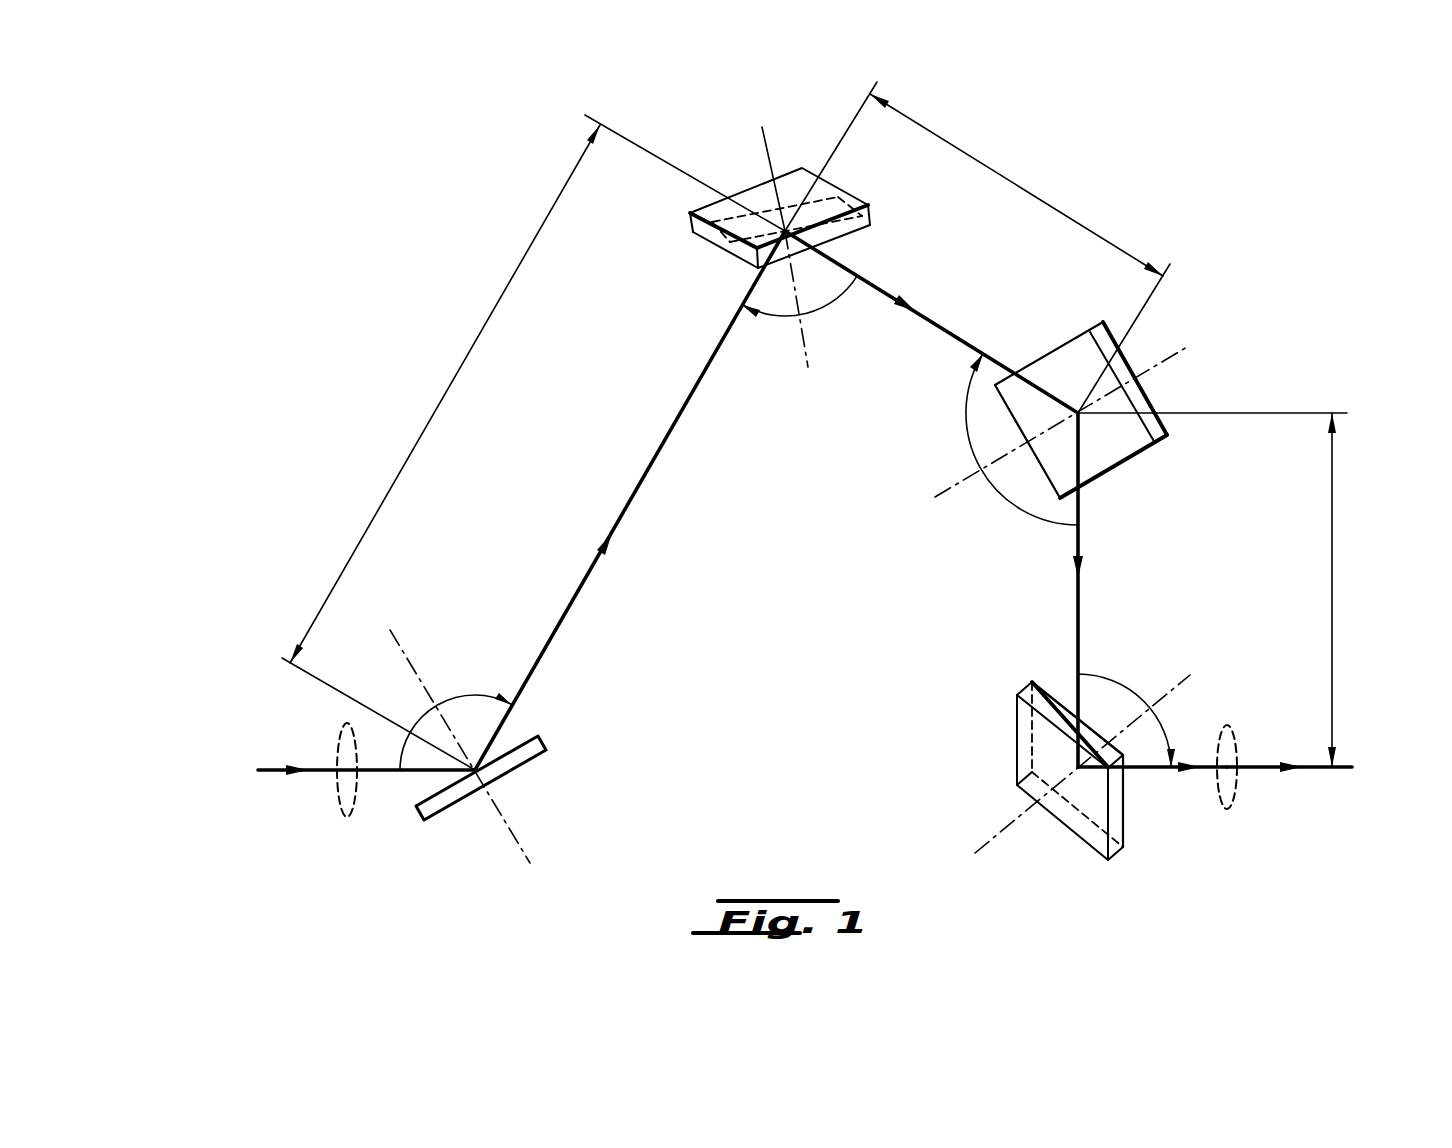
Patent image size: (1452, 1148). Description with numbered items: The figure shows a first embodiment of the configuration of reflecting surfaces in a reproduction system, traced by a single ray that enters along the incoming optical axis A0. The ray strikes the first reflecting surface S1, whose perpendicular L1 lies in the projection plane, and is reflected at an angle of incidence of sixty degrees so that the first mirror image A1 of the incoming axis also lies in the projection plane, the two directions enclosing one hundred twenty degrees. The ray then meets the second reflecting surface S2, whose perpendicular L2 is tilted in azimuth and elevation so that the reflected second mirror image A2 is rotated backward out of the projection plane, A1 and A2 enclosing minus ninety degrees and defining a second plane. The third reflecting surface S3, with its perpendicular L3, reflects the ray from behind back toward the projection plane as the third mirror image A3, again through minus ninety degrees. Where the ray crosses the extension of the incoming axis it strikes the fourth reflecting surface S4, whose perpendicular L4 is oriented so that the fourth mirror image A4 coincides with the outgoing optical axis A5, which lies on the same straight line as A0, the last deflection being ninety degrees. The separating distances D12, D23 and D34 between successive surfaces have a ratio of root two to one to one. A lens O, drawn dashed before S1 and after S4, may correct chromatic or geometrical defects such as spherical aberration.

The incoming optical axis A0 is at (381, 772).
The first mirror image of the incoming optical axis A1 is at (636, 490).
The second mirror image of the incoming optical axis A2 is at (933, 320).
The third mirror image of the incoming optical axis A3 is at (1078, 613).
The fourth mirror image of the incoming optical axis A4 is at (1153, 770).
The outgoing optical axis A5 is at (1317, 768).
The lens O is at (337, 797).
The first reflecting surface S1 is at (455, 795).
The second reflecting surface S2 is at (833, 232).
The third reflecting surface S3 is at (1068, 358).
The fourth reflecting surface S4 is at (1028, 742).
The perpendicular to the first reflecting surface L1 is at (402, 632).
The perpendicular to the second reflecting surface L2 is at (817, 419).
The perpendicular to the third reflecting surface L3 is at (950, 485).
The perpendicular to the fourth reflecting surface L4 is at (1178, 684).
The separating distance between the first and second reflecting surfaces D12 is at (444, 398).
The separating distance between the second and third reflecting surfaces D23 is at (1000, 174).
The separating distance between the third and fourth reflecting surfaces D34 is at (1332, 592).